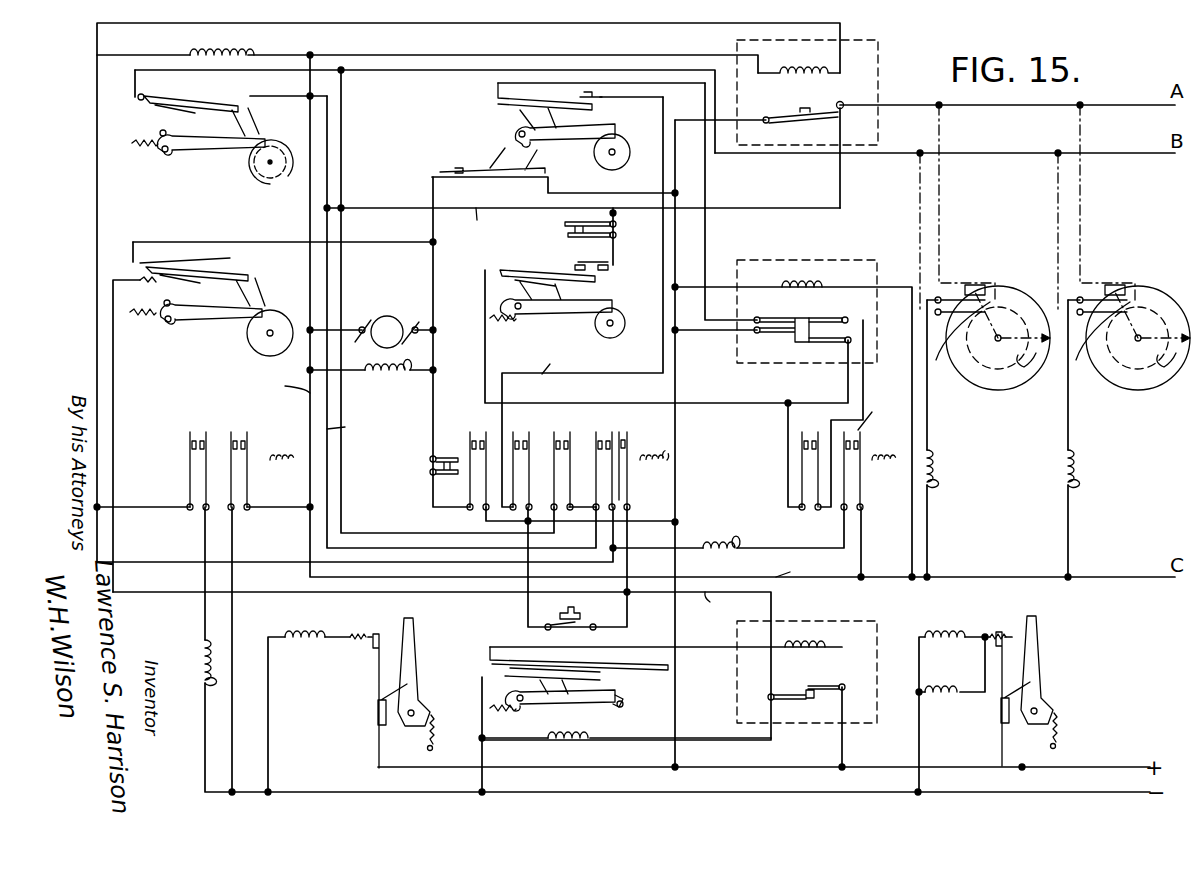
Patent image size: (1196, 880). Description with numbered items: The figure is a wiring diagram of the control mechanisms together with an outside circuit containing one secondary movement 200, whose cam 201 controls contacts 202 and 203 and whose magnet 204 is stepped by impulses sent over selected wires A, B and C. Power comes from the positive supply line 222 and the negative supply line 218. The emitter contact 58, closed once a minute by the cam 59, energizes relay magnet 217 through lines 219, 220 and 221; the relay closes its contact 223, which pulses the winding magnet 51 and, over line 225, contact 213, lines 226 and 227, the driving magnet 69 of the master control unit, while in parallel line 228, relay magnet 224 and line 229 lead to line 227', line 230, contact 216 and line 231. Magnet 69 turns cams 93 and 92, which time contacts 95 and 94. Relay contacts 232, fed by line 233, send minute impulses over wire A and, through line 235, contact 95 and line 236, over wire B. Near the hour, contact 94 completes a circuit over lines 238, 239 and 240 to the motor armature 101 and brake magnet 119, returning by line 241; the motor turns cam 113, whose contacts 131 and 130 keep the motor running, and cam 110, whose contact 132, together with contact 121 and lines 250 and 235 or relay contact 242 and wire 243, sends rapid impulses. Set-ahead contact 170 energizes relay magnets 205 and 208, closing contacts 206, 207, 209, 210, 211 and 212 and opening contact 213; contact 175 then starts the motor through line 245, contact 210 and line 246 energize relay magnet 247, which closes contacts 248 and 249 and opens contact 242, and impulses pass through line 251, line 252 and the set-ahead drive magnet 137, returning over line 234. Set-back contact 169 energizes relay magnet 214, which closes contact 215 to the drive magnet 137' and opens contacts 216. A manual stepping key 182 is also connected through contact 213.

The driving magnet 69 is at (248, 54).
The contact 95 is at (240, 102).
The double cam 93 is at (276, 140).
The line 227 is at (170, 307).
The line 227' is at (423, 322).
The contact 94 is at (251, 278).
The cam 92 is at (271, 322).
The line 241 is at (280, 379).
The contact 215 is at (192, 428).
The contacts 216 is at (240, 428).
The relay magnet 214 is at (275, 459).
The line 239 is at (114, 452).
The line 230 is at (262, 507).
The line 226 is at (260, 562).
The set ahead control drive magnet 137 is at (728, 525).
The drive magnet 137' is at (526, 649).
The line 231 is at (233, 626).
The line 228 is at (465, 24).
The line 229 is at (580, 56).
The line 236 is at (424, 70).
The contact 130 is at (580, 100).
The contact 131 is at (458, 170).
The cam 113 is at (616, 168).
The line 250 is at (492, 219).
The contact 121 is at (560, 228).
The contact 132 is at (568, 266).
The line 240 is at (433, 280).
The line 252 is at (342, 268).
The motor armature 101 is at (387, 314).
The brake magnet 119 is at (382, 380).
The line 251 is at (353, 422).
The contact 209 is at (469, 430).
The contact 175 is at (411, 470).
The contact 210 is at (518, 431).
The contact 211 is at (566, 456).
The contact 212 is at (607, 456).
The contact 213 is at (628, 432).
The relay magnet 208 is at (647, 463).
The line 246 is at (561, 360).
The cam 110 is at (618, 336).
The line 233 is at (680, 231).
The wire 243 is at (727, 404).
The contact 207 is at (802, 430).
The contact 206 is at (879, 412).
The relay magnet 205 is at (882, 453).
The line 245 is at (570, 520).
The line 234 is at (796, 566).
The line 238 is at (460, 593).
The manual stepping key 182 is at (573, 628).
The contact 58 is at (604, 668).
The cam 59 is at (624, 697).
The winding magnet 51 is at (580, 742).
The line 220 is at (482, 750).
The line 219 is at (726, 792).
The contact 169 is at (398, 628).
The line 225 is at (724, 603).
The relay coil 217 is at (818, 644).
The relay contact 223 is at (806, 701).
The line 221 is at (844, 744).
The contact 170 is at (1028, 624).
The positive supply line 222 is at (1086, 766).
The negative supply line 218 is at (1026, 792).
The relay magnet 224 is at (826, 76).
The relay contacts 232 is at (820, 121).
The line 235 is at (766, 208).
The relay magnet 247 is at (813, 272).
The relay interlock contact 249 is at (775, 318).
The relay contact 248 is at (826, 318).
The relay contact 242 is at (825, 338).
The contact 202 is at (990, 294).
The cam 201 is at (1009, 318).
The contact 203 is at (1031, 345).
The secondary movement 200 is at (1000, 388).
The magnet 204 is at (934, 468).